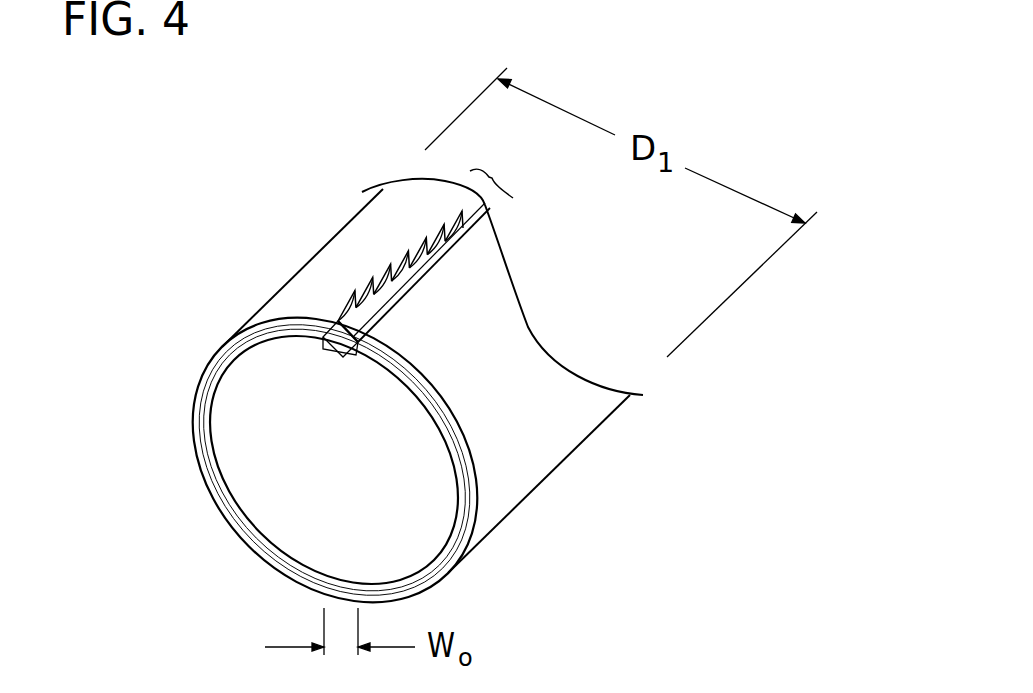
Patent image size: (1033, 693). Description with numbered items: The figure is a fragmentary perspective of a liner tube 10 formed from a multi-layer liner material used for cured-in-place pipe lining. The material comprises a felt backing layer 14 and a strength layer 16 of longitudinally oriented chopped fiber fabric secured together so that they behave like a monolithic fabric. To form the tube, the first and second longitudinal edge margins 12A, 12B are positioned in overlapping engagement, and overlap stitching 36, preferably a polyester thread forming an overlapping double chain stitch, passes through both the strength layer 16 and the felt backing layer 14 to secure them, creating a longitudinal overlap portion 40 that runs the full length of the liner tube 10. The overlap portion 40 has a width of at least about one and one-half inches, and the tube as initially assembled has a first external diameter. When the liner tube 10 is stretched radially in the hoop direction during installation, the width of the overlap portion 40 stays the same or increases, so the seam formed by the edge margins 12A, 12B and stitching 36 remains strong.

The liner tube 10 is at (213, 533).
The first longitudinal edge margin 12A is at (410, 277).
The second longitudinal edge margin 12B is at (336, 352).
The felt backing layer 14 is at (297, 530).
The strength layer 16 is at (332, 270).
The overlap stitching 36 is at (440, 217).
The longitudinal overlap portion 40 is at (494, 170).